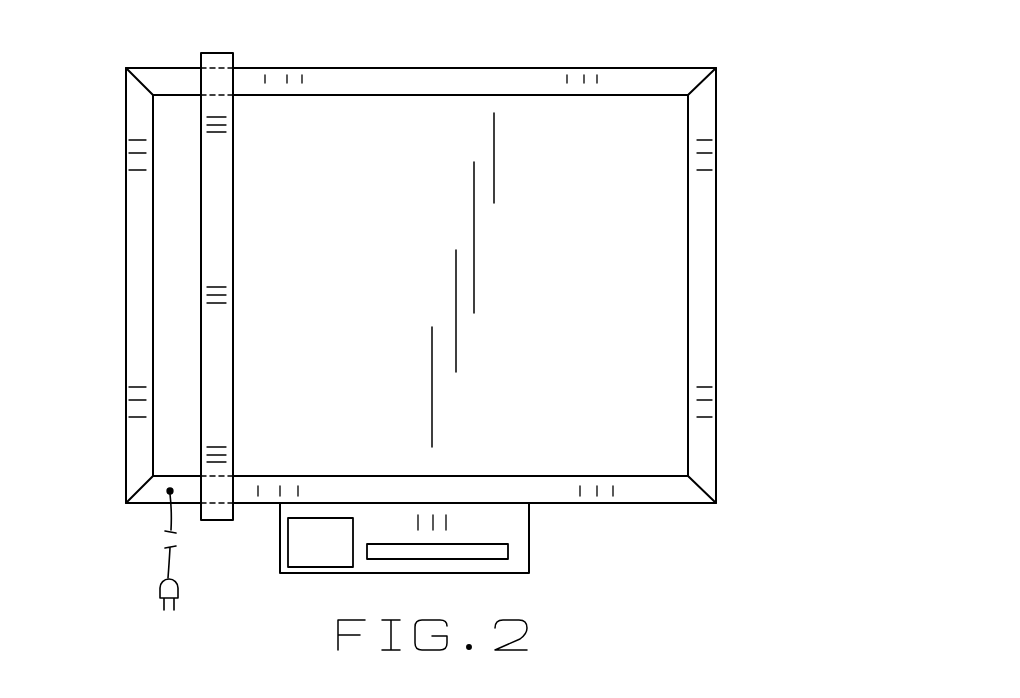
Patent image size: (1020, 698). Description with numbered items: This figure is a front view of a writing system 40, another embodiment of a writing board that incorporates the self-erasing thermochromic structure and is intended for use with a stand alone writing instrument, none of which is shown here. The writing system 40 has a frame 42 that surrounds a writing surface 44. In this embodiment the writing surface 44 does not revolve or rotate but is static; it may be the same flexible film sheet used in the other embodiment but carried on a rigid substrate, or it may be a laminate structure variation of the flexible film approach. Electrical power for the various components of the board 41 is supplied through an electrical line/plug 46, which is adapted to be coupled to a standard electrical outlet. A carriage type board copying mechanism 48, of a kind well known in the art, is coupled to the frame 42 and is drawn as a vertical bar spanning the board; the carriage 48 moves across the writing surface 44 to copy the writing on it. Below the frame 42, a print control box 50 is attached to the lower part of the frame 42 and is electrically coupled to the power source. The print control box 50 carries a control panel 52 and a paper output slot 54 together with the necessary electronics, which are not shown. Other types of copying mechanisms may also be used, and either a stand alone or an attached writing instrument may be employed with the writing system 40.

The writing system 40 is at (664, 53).
The board 41 is at (338, 55).
The frame 42 is at (422, 83).
The writing surface 44 is at (378, 254).
The electrical line/plug 46 is at (168, 560).
The carriage type board copying mechanism 48 is at (215, 80).
The print control box 50 is at (513, 522).
The control panel 52 is at (313, 540).
The paper output slot 54 is at (487, 553).